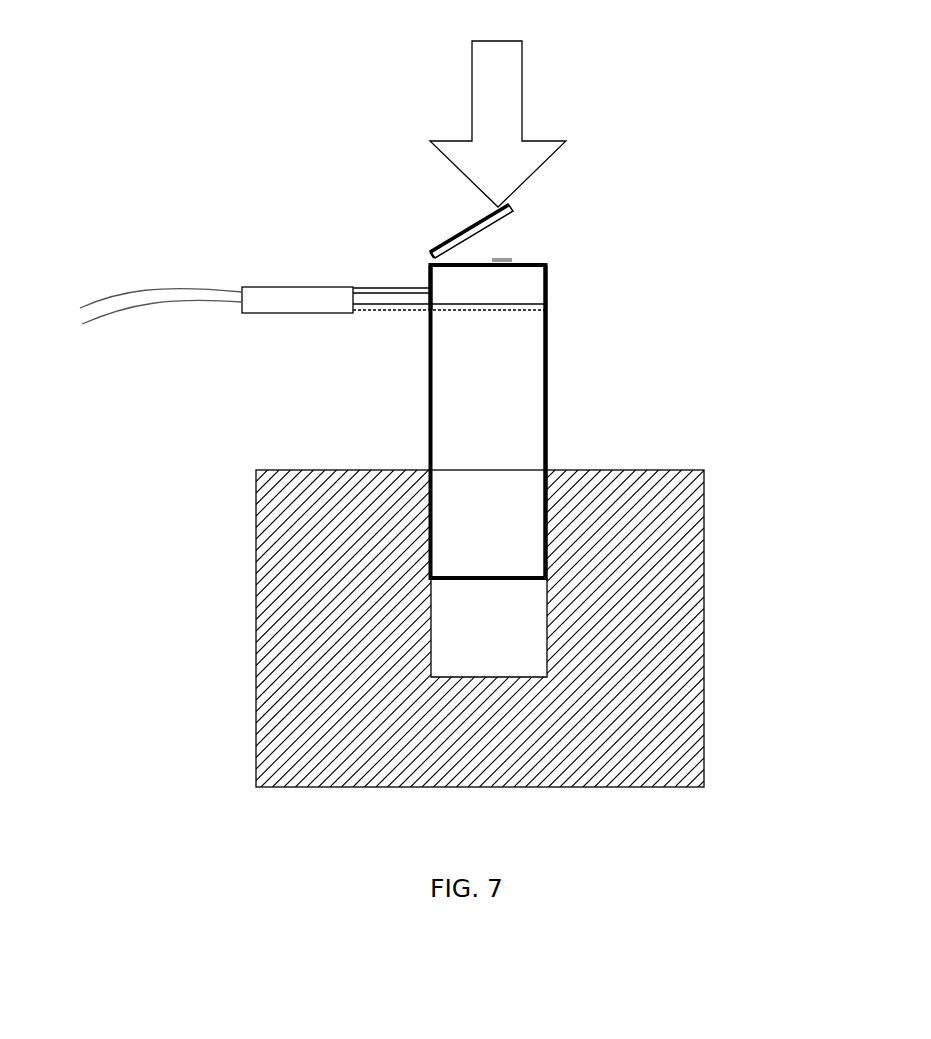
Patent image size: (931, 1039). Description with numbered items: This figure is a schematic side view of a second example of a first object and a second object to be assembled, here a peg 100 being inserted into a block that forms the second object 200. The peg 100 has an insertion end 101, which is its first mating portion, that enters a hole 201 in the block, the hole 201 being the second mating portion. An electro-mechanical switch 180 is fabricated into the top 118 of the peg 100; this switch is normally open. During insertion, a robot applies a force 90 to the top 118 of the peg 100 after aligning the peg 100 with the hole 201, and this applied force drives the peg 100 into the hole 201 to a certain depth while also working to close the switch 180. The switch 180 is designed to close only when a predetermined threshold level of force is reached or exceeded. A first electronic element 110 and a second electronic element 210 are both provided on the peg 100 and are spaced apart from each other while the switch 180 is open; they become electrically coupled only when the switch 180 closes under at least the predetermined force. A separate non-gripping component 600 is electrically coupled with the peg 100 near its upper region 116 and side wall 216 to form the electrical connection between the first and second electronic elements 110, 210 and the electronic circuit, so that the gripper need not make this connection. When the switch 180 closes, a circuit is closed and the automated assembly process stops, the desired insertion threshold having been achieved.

The force 90 is at (509, 97).
The peg 100 is at (445, 414).
The insertion end 101 is at (482, 577).
The first electronic element 110 is at (506, 226).
The tube upper end 116 is at (428, 291).
The top 118 is at (417, 252).
The electro-mechanical switch 180 is at (445, 228).
The second object 200 is at (633, 617).
The hole 201 is at (460, 618).
The second electronic element 210 is at (508, 258).
The tube side wall 216 is at (550, 288).
The non-gripping component 600 is at (310, 290).